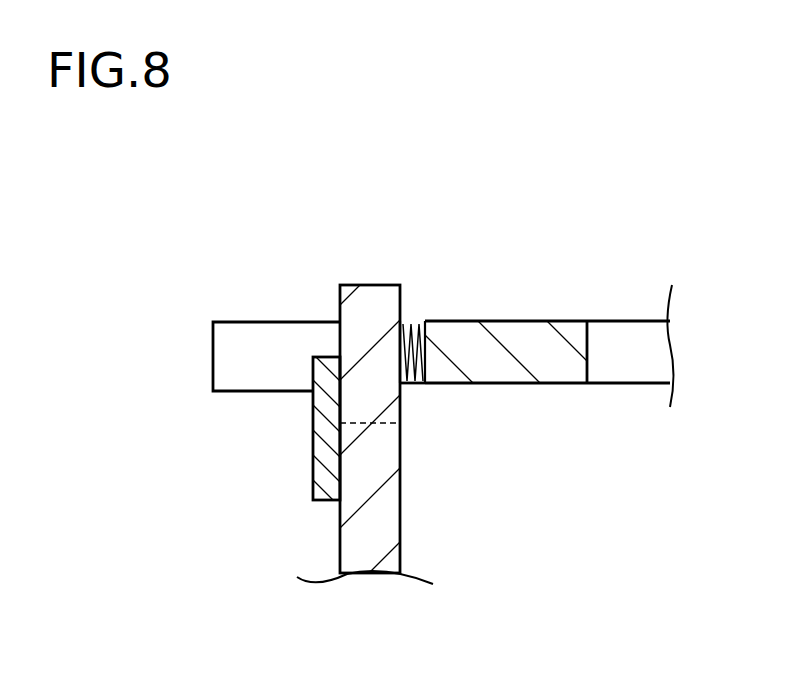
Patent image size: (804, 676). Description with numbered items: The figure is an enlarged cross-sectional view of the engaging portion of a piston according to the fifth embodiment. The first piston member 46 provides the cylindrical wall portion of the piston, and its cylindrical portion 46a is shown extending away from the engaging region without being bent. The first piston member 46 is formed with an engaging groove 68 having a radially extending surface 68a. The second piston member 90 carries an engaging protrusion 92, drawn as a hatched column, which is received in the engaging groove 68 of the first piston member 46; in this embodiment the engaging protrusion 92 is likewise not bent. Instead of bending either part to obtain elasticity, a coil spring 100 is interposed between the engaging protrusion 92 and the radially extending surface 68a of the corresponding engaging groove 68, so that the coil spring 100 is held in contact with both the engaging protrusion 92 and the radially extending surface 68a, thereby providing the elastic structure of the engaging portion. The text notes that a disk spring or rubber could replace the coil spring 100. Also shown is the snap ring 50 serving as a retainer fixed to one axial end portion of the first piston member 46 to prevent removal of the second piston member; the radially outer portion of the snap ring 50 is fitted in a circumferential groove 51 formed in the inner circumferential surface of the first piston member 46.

The first piston member 46 is at (528, 220).
The cylindrical portion 46a is at (539, 340).
The snap ring 50 is at (323, 442).
The circumferential groove 51 is at (312, 377).
The engaging groove 68 is at (270, 345).
The radially extending surface 68a is at (418, 385).
The second piston member 90 is at (442, 535).
The engaging protrusion 92 is at (380, 303).
The coil spring 100 is at (417, 322).